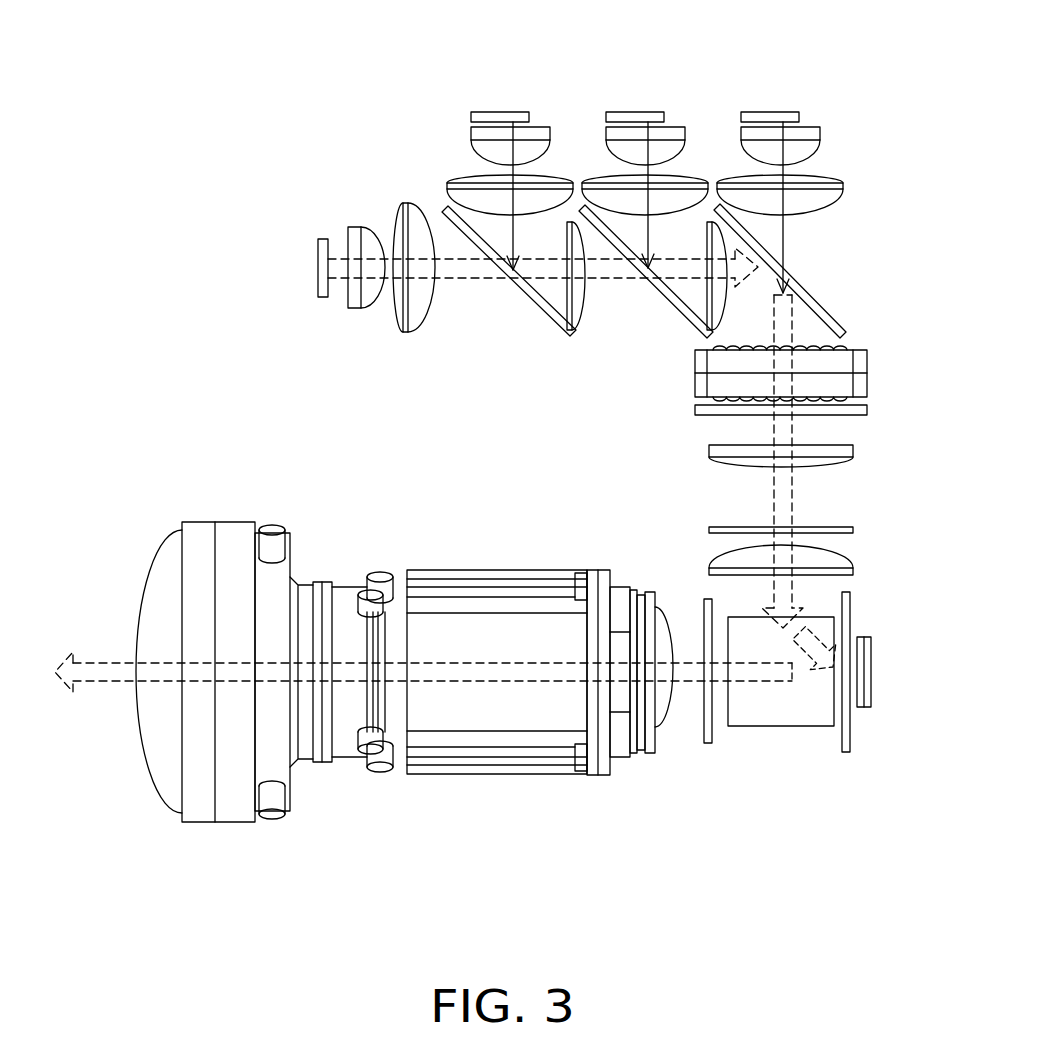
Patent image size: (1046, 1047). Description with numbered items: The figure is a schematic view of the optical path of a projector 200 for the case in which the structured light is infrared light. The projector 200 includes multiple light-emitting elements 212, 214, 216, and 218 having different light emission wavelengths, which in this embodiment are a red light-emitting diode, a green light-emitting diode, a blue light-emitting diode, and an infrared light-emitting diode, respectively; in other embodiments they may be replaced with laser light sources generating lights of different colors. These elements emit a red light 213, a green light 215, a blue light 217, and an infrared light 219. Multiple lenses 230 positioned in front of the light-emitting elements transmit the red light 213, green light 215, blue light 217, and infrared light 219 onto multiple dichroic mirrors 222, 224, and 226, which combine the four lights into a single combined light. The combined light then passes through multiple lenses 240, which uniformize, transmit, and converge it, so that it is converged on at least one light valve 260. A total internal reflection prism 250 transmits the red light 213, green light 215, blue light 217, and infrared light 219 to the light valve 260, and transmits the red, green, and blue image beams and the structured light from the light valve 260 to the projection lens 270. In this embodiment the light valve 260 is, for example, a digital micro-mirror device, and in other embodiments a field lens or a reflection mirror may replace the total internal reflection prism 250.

The projector 200 is at (931, 833).
The light-emitting element 212 is at (767, 117).
The red light 213 is at (780, 168).
The light-emitting element 214 is at (632, 117).
The green light 215 is at (653, 168).
The light-emitting element 216 is at (497, 117).
The blue light 217 is at (517, 168).
The light-emitting element 218 is at (320, 242).
The infrared light 219 is at (466, 279).
The dichroic mirror 222 is at (820, 305).
The dichroic mirror 224 is at (672, 305).
The dichroic mirror 226 is at (540, 305).
The lenses 230 is at (462, 180).
The lenses 240 is at (865, 385).
The total internal reflection prism 250 is at (784, 722).
The light valve 260 is at (867, 707).
The projection lens 270 is at (500, 713).